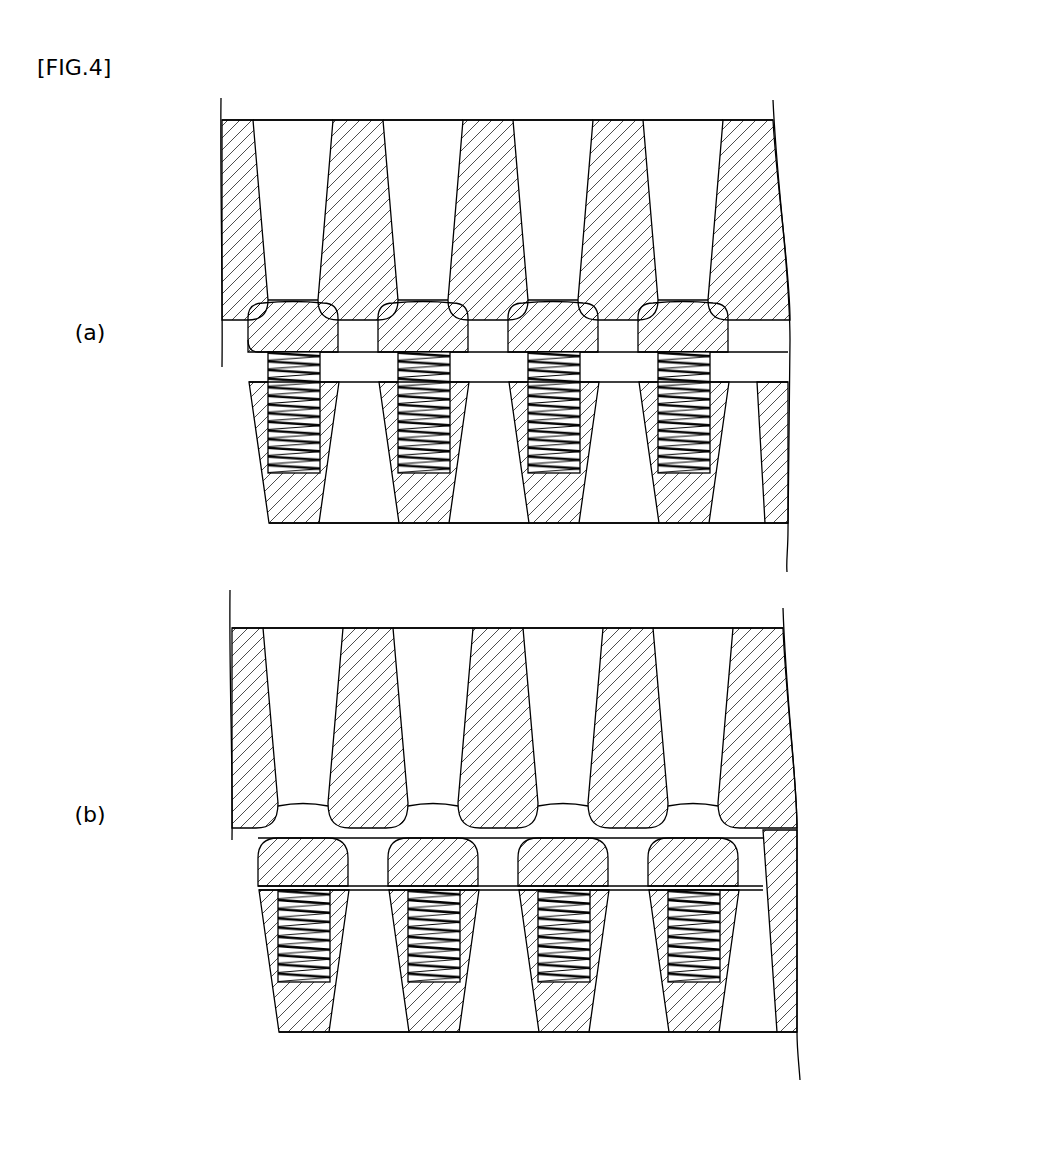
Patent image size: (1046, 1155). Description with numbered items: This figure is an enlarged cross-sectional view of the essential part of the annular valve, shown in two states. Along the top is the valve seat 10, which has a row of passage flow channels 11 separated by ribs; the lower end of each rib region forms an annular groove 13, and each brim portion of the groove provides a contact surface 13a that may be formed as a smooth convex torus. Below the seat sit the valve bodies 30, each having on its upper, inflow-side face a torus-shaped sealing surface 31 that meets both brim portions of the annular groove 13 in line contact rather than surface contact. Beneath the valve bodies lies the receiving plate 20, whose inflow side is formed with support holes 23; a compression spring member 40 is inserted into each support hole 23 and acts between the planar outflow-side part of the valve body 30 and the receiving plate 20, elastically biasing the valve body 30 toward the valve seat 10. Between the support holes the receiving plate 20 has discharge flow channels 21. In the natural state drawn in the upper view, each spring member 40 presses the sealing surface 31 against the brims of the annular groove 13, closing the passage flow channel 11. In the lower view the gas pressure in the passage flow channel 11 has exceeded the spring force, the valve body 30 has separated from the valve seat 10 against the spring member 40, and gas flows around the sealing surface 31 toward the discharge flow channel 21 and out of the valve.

The valve seat 10 is at (795, 196).
The passage flow channel 11 is at (283, 183).
The annular groove 13 is at (693, 308).
The contact surface 13a is at (266, 308).
The receiving plate 20 is at (272, 520).
The discharge flow channel 21 is at (343, 476).
The support hole 23 is at (262, 432).
The valve body 30 is at (740, 343).
The sealing surface 31 is at (262, 306).
The spring member 40 is at (268, 362).